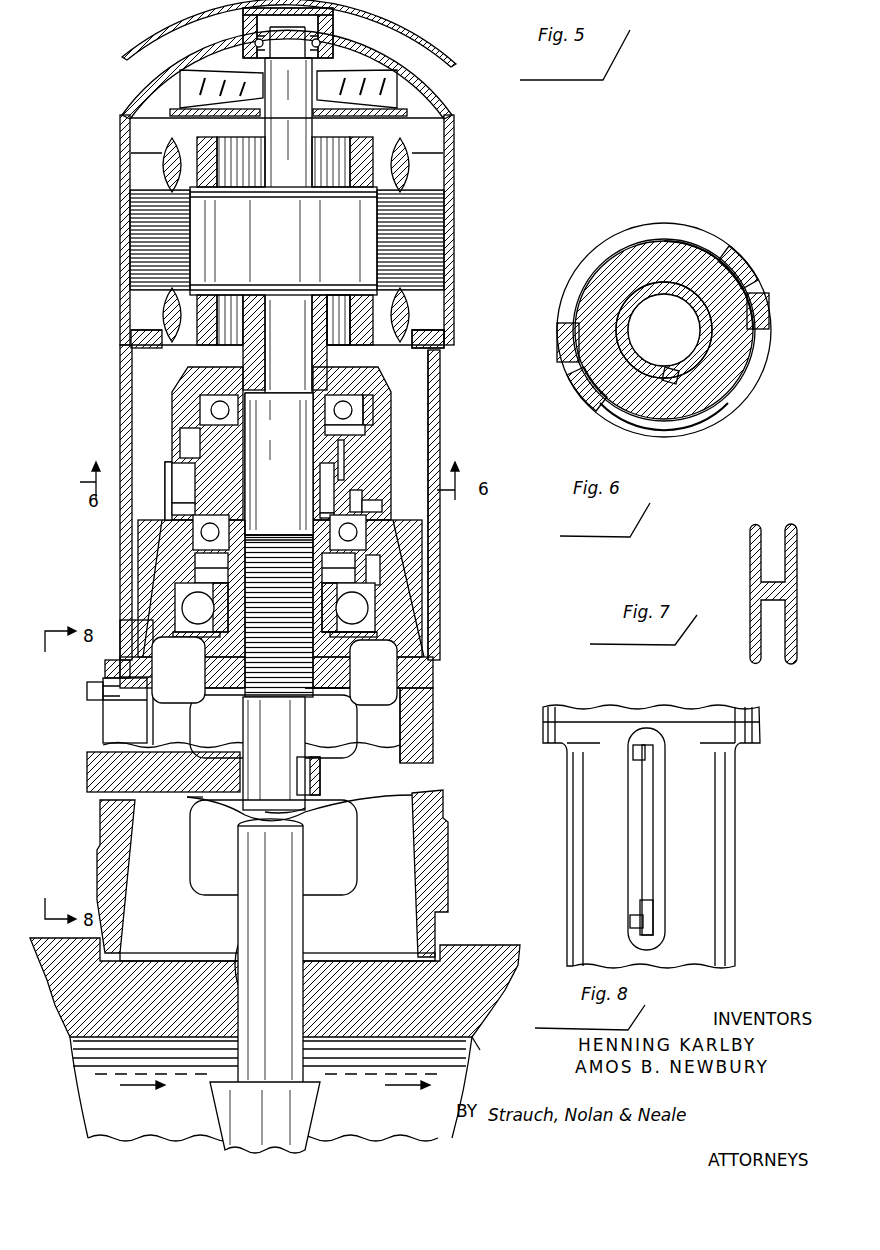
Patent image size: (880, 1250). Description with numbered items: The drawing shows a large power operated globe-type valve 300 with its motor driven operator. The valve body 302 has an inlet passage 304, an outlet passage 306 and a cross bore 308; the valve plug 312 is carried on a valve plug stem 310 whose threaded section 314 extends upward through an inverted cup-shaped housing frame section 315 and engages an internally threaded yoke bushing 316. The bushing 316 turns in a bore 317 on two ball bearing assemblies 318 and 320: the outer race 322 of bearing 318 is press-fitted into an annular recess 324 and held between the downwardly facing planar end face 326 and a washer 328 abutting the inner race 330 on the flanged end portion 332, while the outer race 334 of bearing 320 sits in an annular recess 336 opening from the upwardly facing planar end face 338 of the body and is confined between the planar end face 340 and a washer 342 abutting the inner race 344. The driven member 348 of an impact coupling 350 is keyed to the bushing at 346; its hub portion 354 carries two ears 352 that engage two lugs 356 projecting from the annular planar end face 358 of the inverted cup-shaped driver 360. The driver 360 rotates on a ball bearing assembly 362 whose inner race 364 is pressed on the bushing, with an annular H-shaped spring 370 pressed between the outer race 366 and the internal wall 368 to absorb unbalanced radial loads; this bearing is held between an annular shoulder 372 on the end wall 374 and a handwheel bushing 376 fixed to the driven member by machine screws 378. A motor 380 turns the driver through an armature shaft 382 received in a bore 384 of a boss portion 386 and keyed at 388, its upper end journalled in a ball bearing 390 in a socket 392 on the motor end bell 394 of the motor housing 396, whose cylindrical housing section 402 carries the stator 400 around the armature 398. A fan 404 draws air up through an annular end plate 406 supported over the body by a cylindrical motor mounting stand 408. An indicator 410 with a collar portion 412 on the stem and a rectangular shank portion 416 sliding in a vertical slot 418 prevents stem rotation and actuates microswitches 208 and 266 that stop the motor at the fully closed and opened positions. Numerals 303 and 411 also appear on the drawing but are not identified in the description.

In FIG. 8, the microswitch 208 is at (632, 922).
In FIG. 5, the microswitch 266 is at (88, 694).
In FIG. 8, the microswitch 266 is at (647, 766).
In FIG. 5, the power operated globe-type valve 300 is at (440, 621).
In FIG. 5, the valve body 302 is at (450, 947).
In FIG. 5, the pump housing base 303 is at (434, 690).
In FIG. 5, the inlet passage 304 is at (88, 1083).
In FIG. 5, the outlet passage 306 is at (462, 1069).
In FIG. 5, the cross bore 308 is at (250, 950).
In FIG. 5, the valve plug stem 310 is at (303, 933).
In FIG. 5, the valve plug 312 is at (318, 1096).
In FIG. 5, the threaded section 314 is at (294, 690).
In FIG. 5, the housing frame section 315 is at (443, 792).
In FIG. 8, the housing frame section 315 is at (738, 770).
In FIG. 5, the yoke bushing 316 is at (247, 479).
In FIG. 6, the yoke bushing 316 is at (673, 293).
In FIG. 5, the bore 317 is at (246, 580).
In FIG. 5, the ball bearing assembly 318 is at (375, 597).
In FIG. 5, the ball bearing assembly 320 is at (370, 539).
In FIG. 5, the outer race 322 is at (172, 592).
In FIG. 5, the annular recess 324 is at (178, 638).
In FIG. 5, the planar end face 326 is at (176, 615).
In FIG. 5, the washer 328 is at (352, 638).
In FIG. 5, the inner race 330 is at (338, 655).
In FIG. 5, the flanged end portion 332 is at (345, 690).
In FIG. 5, the outer race 334 is at (366, 544).
In FIG. 5, the annular recess 336 is at (220, 546).
In FIG. 5, the planar end face 338 is at (378, 506).
In FIG. 5, the planar end face 340 is at (338, 532).
In FIG. 5, the washer 342 is at (362, 498).
In FIG. 5, the inner race 344 is at (247, 521).
In FIG. 5, the key 346 is at (332, 470).
In FIG. 6, the key 346 is at (668, 367).
In FIG. 5, the driven member 348 is at (200, 466).
In FIG. 6, the driven member 348 is at (660, 431).
In FIG. 6, the impact coupling 350 is at (655, 256).
In FIG. 5, the ears 352 is at (178, 508).
In FIG. 6, the ears 352 is at (766, 300).
In FIG. 6, the hub portion 354 is at (694, 250).
In FIG. 5, the lugs 356 is at (360, 483).
In FIG. 6, the lugs 356 is at (746, 268).
In FIG. 6, the annular planar end face 358 is at (596, 256).
In FIG. 5, the impact coupling driver 360 is at (195, 468).
In FIG. 6, the impact coupling driver 360 is at (632, 213).
In FIG. 5, the ball bearing assembly 362 is at (372, 390).
In FIG. 5, the inner race 364 is at (322, 395).
In FIG. 5, the outer race 366 is at (202, 396).
In FIG. 5, the internal wall 368 is at (246, 428).
In FIG. 5, the annular H-shaped spring 370 is at (364, 393).
In FIG. 7, the annular H-shaped spring 370 is at (804, 526).
In FIG. 5, the annular shoulder 372 is at (247, 400).
In FIG. 5, the end wall 374 is at (190, 367).
In FIG. 5, the handwheel bushing 376 is at (246, 455).
In FIG. 5, the machine screws 378 is at (376, 432).
In FIG. 5, the motor 380 is at (118, 213).
In FIG. 5, the armature shaft 382 is at (312, 128).
In FIG. 5, the bore 384 is at (262, 320).
In FIG. 5, the boss portion 386 is at (318, 325).
In FIG. 5, the key 388 is at (307, 353).
In FIG. 5, the ball bearing 390 is at (333, 50).
In FIG. 5, the socket 392 is at (334, 16).
In FIG. 5, the motor end bell 394 is at (131, 103).
In FIG. 5, the motor housing 396 is at (120, 163).
In FIG. 5, the motor armature 398 is at (220, 152).
In FIG. 5, the motor stator 400 is at (135, 240).
In FIG. 5, the cylindrical housing section 402 is at (122, 292).
In FIG. 5, the fan 404 is at (397, 97).
In FIG. 5, the annular end plate 406 is at (430, 328).
In FIG. 5, the cylindrical motor mounting stand 408 is at (440, 444).
In FIG. 5, the indicator 410 is at (88, 790).
In FIG. 5, the pin 411 is at (320, 790).
In FIG. 5, the collar portion 412 is at (322, 760).
In FIG. 5, the rectangular shank portion 416 is at (203, 800).
In FIG. 8, the rectangular shank portion 416 is at (653, 911).
In FIG. 5, the vertical slot 418 is at (103, 729).
In FIG. 8, the vertical slot 418 is at (650, 849).